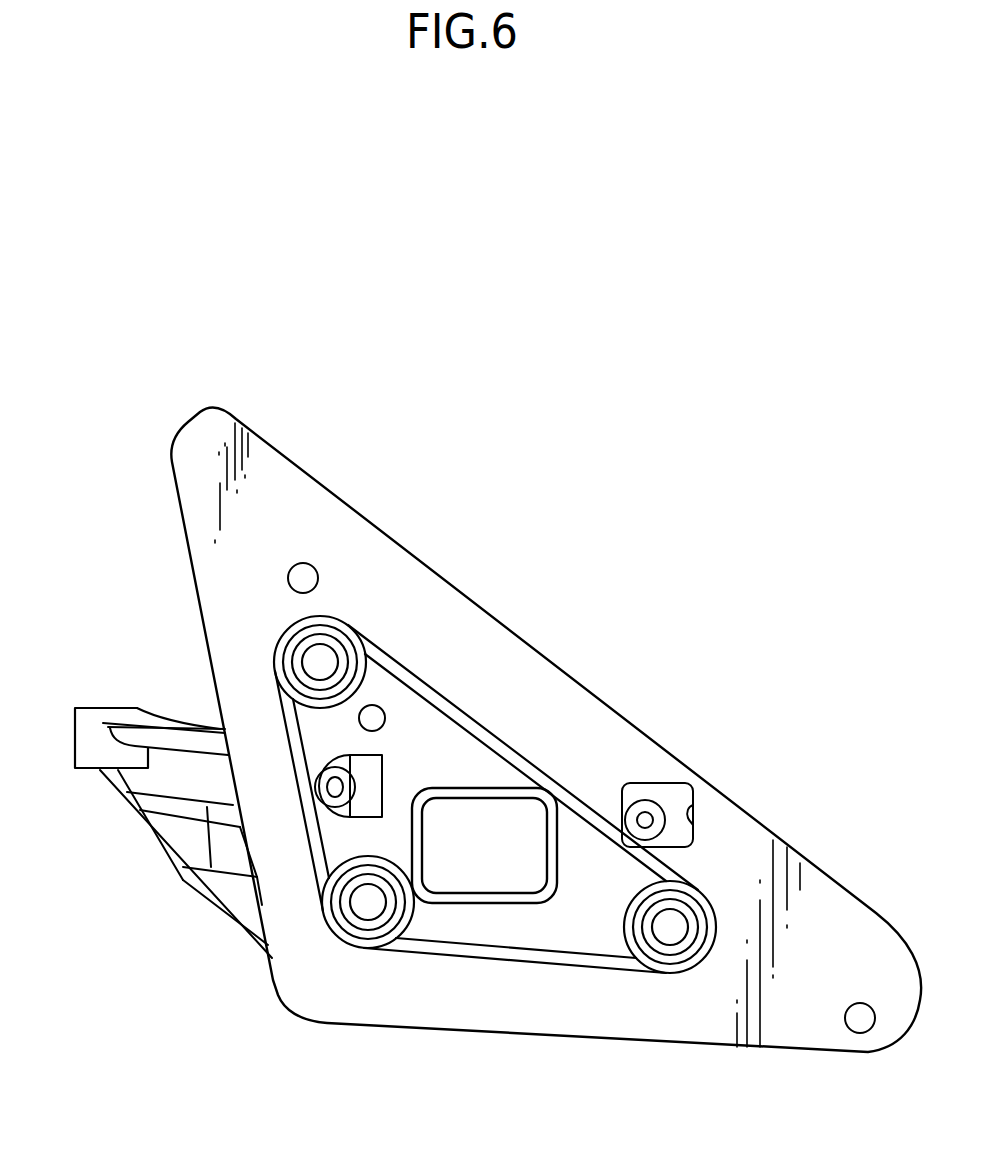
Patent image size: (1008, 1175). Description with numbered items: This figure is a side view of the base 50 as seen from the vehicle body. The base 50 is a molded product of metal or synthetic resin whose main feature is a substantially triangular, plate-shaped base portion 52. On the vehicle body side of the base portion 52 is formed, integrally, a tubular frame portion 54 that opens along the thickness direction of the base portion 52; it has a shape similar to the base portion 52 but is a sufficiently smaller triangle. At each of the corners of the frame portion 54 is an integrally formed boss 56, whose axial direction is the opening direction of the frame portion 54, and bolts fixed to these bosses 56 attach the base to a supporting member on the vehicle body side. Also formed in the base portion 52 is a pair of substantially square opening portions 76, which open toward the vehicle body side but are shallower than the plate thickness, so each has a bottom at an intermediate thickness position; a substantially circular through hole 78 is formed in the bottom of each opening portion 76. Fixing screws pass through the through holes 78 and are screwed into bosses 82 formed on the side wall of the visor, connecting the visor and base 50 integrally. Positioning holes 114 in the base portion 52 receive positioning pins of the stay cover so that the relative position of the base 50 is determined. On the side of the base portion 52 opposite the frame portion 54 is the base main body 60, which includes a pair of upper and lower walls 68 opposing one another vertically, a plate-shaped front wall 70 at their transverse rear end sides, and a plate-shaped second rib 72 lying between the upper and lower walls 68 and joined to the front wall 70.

The base 50 is at (532, 466).
The base portion 52 is at (537, 670).
The frame portion 54 is at (437, 697).
The boss 56 is at (360, 690).
The base main body 60 is at (157, 700).
The upper and lower walls 68 is at (193, 722).
The front wall 70 is at (188, 778).
The second rib 72 is at (178, 862).
The opening portion 76 is at (377, 792).
The through hole 78 is at (336, 787).
The boss 82 is at (108, 770).
The positioning hole 114 is at (310, 576).